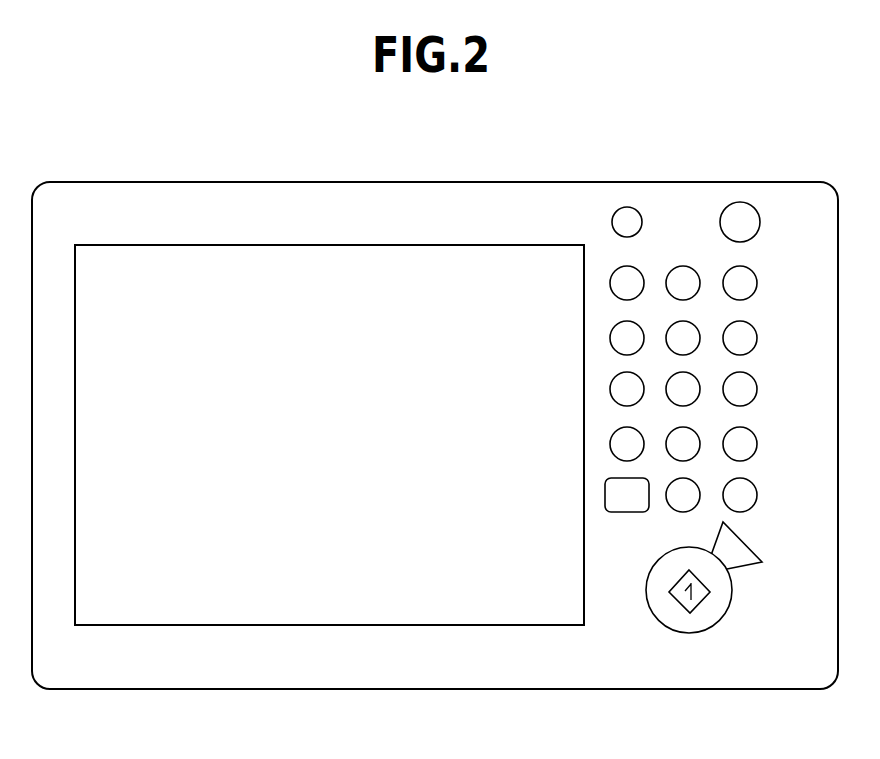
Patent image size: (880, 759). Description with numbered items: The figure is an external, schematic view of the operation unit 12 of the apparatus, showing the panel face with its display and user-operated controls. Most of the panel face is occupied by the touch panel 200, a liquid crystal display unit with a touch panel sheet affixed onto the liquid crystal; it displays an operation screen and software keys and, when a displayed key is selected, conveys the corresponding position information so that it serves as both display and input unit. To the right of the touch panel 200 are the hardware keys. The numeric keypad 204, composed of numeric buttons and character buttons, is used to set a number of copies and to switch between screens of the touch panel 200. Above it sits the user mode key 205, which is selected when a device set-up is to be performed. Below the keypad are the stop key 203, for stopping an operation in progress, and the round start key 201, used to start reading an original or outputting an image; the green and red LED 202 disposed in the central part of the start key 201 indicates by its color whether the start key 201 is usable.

The operation unit 12 is at (478, 182).
The touch panel 200 is at (331, 245).
The start key 201 is at (732, 588).
The LED 202 is at (675, 597).
The stop key 203 is at (737, 552).
The numeric keypad 204 is at (713, 365).
The user mode key 205 is at (627, 207).